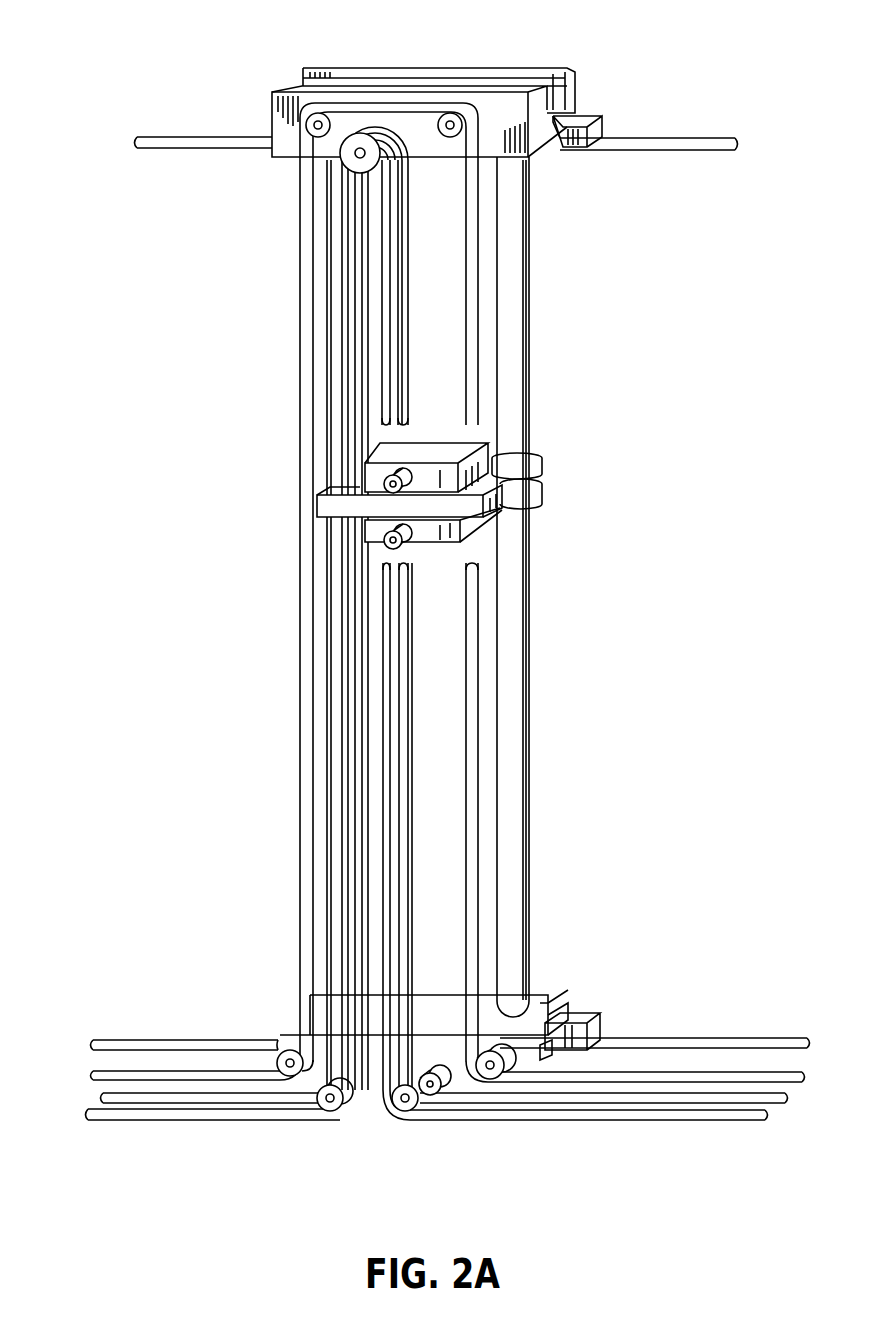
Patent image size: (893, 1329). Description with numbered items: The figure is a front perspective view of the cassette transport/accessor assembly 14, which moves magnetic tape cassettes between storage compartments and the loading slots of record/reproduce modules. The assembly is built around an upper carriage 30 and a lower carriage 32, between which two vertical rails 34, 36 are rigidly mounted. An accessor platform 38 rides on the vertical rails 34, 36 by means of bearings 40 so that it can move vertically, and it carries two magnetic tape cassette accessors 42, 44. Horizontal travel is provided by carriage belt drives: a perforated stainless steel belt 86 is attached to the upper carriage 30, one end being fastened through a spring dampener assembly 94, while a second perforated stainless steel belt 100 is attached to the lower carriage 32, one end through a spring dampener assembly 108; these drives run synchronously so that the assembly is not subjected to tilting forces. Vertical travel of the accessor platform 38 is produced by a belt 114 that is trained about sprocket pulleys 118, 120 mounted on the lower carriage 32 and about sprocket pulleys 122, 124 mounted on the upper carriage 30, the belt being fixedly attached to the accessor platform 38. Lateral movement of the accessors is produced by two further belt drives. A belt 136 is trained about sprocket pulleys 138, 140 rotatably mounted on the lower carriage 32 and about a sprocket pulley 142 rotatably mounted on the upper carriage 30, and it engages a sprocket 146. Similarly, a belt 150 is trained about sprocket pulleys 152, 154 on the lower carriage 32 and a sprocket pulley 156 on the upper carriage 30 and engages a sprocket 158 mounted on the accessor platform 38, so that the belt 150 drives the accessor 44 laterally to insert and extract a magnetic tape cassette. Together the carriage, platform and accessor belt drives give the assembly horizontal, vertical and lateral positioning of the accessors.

The cassette transport/accessor assembly 14 is at (588, 329).
The upper carriage 30 is at (590, 90).
The lower carriage 32 is at (592, 995).
The vertical rail 34 is at (520, 268).
The vertical rail 36 is at (345, 805).
The accessor platform 38 is at (556, 487).
The bearings 40 is at (308, 467).
The magnetic tape cassette accessor 42 is at (430, 444).
The magnetic tape cassette accessor 44 is at (437, 535).
The perforated stainless steel belt 86 is at (150, 152).
The spring dampener assembly 94 is at (583, 143).
The perforated stainless steel belt 100 is at (130, 1040).
The spring dampener assembly 108 is at (568, 1015).
The perforated stainless steel belt 114 is at (305, 735).
The sprocket pulley 118 is at (268, 1043).
The sprocket pulley 120 is at (490, 1078).
The sprocket pulley 122 is at (316, 119).
The sprocket pulley 124 is at (455, 114).
The perforated stainless steel belt 136 is at (410, 700).
The sprocket pulley 138 is at (295, 1047).
The sprocket pulley 140 is at (440, 1090).
The sprocket pulley 142 is at (414, 117).
The sprocket 146 is at (378, 490).
The perforated stainless steel belt 150 is at (583, 1123).
The sprocket pulley 152 is at (393, 1114).
The sprocket pulley 154 is at (320, 1113).
The sprocket pulley 156 is at (353, 155).
The sprocket 158 is at (378, 543).